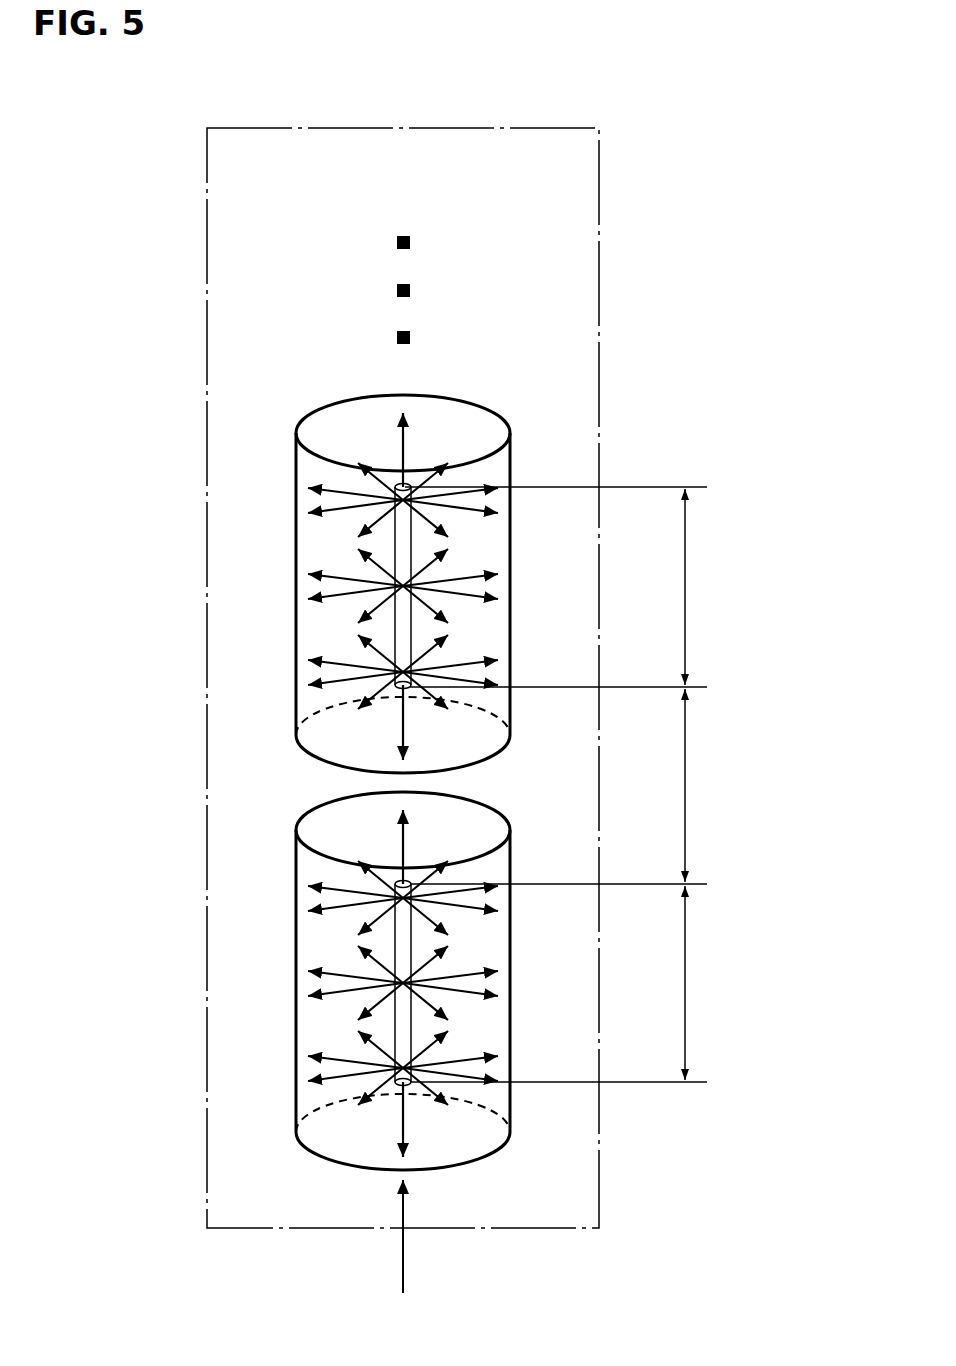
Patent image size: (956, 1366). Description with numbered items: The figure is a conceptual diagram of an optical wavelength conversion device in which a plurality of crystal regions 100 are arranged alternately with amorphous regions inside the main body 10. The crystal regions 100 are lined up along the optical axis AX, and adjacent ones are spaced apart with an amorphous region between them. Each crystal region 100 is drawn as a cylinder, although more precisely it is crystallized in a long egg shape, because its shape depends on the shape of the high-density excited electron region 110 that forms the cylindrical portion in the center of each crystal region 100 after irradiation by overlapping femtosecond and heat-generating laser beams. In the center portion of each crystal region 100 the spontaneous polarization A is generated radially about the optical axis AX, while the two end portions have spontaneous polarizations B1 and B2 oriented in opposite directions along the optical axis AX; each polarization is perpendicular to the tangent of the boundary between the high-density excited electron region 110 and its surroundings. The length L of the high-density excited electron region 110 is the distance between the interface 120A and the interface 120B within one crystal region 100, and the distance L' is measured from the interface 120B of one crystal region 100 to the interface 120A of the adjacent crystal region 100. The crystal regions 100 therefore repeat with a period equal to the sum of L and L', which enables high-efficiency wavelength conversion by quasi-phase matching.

The main body 10 is at (528, 127).
The crystal region 100 is at (495, 410).
The high-density excited electron region 110 is at (405, 545).
The interface 120A is at (396, 686).
The interface 120B is at (396, 487).
The spontaneous polarization A is at (345, 512).
The spontaneous polarization B1 is at (403, 722).
The spontaneous polarization B2 is at (403, 443).
The optical axis AX is at (405, 1253).
The length L is at (556, 784).
The distance L' is at (699, 785).